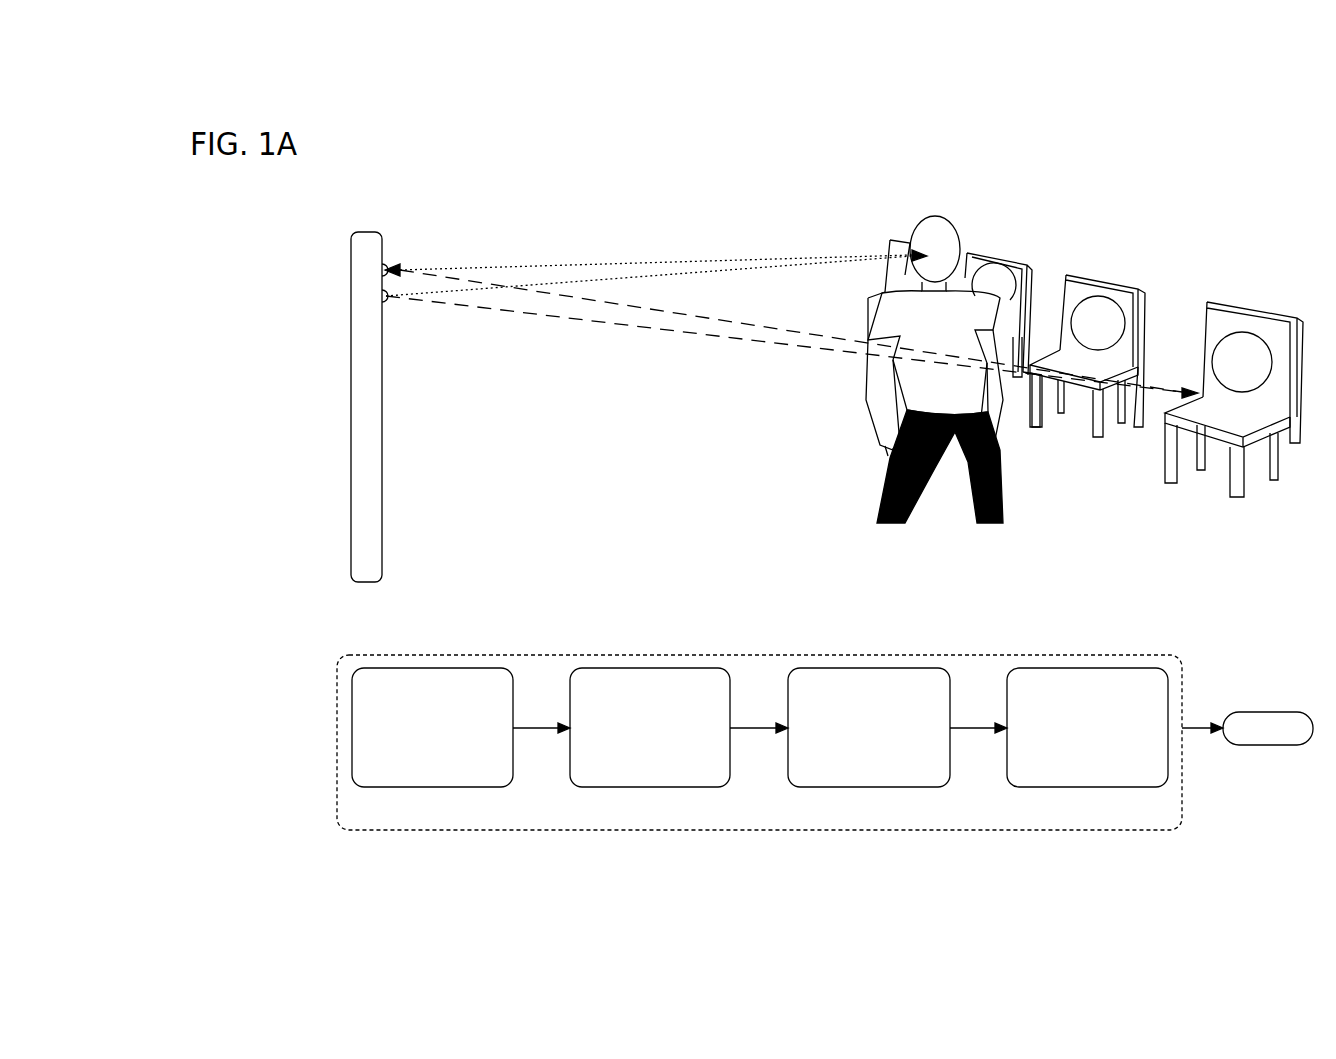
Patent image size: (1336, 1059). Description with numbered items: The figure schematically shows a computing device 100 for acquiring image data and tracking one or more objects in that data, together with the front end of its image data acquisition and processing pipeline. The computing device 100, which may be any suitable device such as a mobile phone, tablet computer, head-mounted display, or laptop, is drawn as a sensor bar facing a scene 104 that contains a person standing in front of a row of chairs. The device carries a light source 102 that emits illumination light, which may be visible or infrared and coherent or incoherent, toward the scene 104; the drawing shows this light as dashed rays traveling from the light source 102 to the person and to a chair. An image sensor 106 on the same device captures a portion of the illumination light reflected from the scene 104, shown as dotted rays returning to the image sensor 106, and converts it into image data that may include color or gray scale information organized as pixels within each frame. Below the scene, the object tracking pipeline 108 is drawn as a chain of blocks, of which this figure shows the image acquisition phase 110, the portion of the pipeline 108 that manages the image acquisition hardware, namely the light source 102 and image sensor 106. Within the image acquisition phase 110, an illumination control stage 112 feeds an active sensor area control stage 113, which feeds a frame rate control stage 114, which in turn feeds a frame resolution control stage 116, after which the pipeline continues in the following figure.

The computing device 100 is at (367, 228).
The light source 102 is at (396, 320).
The scene 104 is at (1096, 194).
The image sensor 106 is at (395, 247).
The pipeline 108 is at (230, 764).
The image acquisition phase 110 is at (884, 820).
The illumination control stage 112 is at (419, 760).
The active sensor area control stage 113 is at (637, 771).
The frame rate control stage 114 is at (856, 760).
The frame resolution control stage 116 is at (1074, 771).